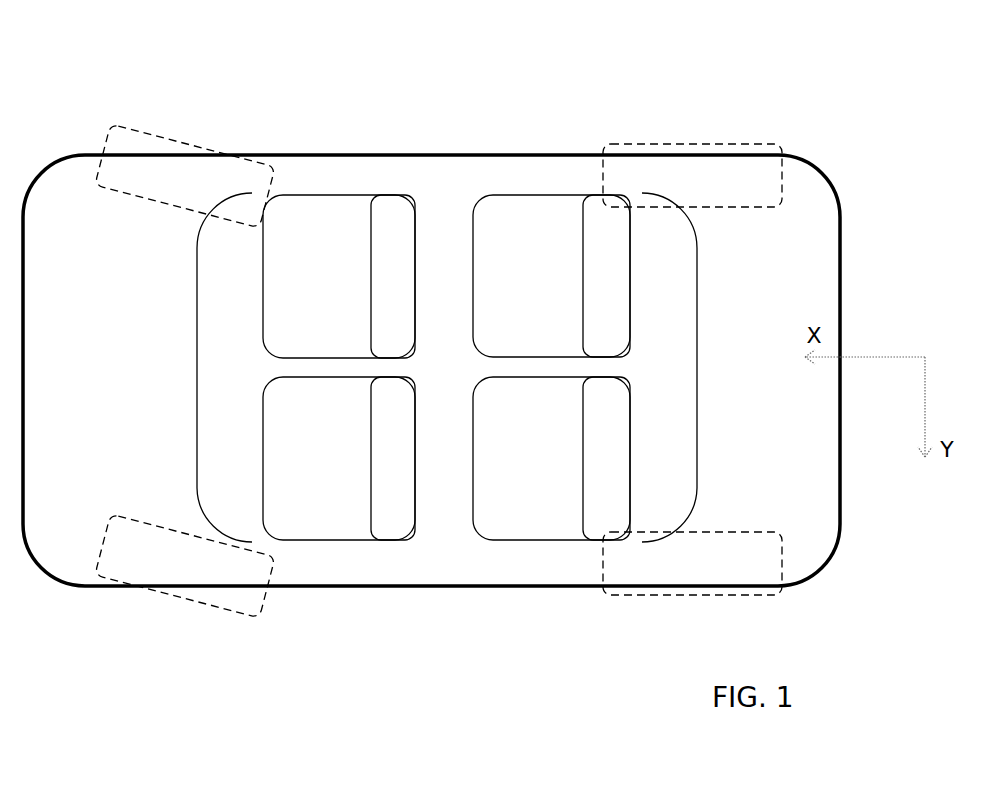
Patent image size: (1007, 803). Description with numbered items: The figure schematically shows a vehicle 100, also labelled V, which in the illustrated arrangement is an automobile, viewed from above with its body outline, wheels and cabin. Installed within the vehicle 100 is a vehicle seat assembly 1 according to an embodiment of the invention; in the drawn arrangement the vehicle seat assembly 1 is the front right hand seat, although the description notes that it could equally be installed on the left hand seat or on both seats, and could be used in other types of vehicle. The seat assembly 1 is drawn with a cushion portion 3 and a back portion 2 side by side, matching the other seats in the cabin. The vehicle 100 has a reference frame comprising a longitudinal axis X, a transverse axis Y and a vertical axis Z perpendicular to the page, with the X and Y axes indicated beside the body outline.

The vehicle seat assembly 1 is at (356, 195).
The seat back 2 is at (390, 213).
The seat cushion 3 is at (312, 213).
The vehicle 100 is at (843, 120).